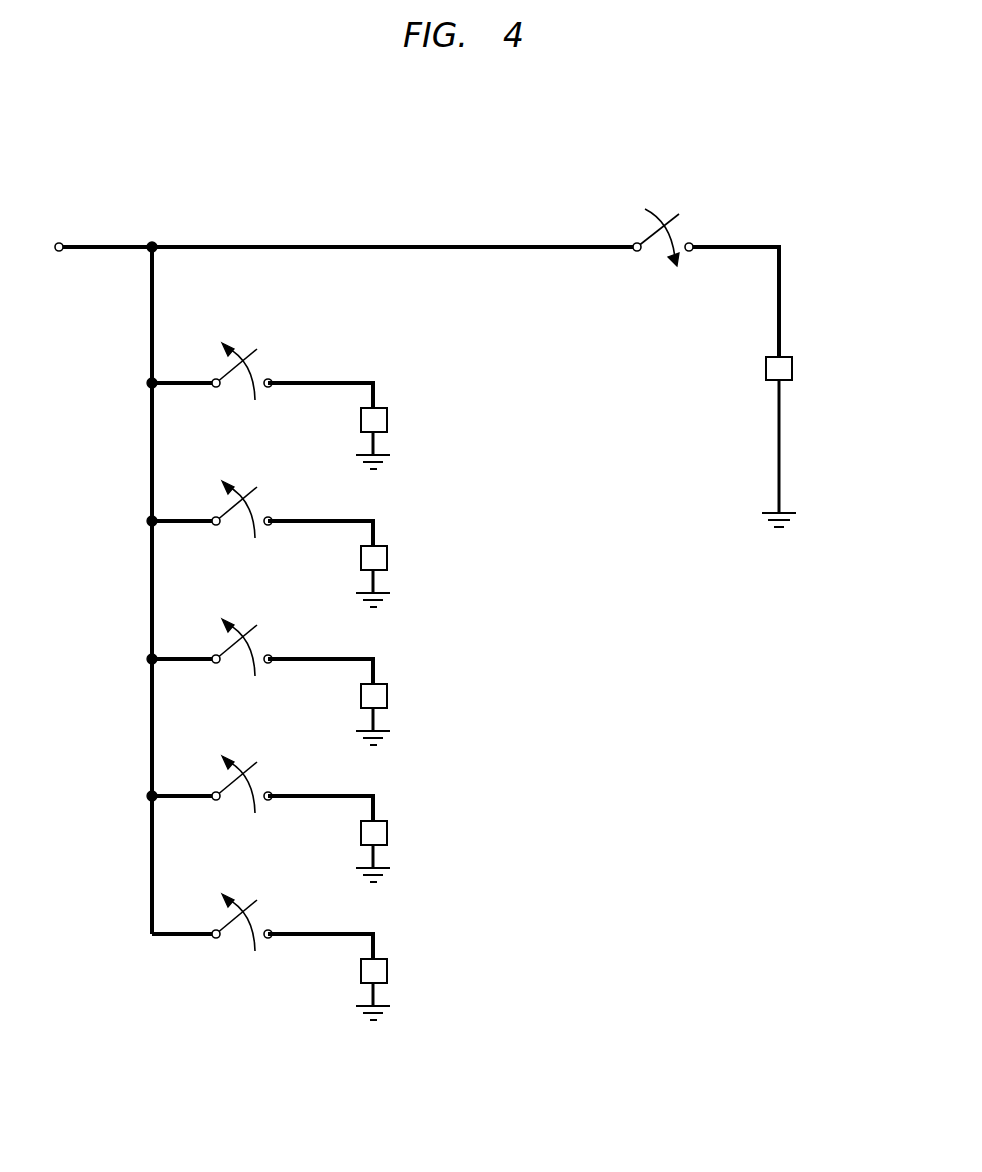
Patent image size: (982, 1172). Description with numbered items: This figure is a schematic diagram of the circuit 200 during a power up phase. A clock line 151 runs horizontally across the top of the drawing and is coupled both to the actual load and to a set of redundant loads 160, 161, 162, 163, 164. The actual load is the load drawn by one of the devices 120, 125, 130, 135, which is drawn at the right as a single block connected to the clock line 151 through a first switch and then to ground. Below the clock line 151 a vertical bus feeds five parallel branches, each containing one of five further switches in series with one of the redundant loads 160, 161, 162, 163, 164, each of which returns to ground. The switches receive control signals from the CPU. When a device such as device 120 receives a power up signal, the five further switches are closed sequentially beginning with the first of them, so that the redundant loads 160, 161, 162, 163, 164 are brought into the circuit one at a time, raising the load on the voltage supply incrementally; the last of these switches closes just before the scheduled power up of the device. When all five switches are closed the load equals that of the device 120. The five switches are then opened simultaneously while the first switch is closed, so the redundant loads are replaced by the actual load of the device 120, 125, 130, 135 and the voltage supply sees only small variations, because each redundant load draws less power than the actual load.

The circuit 200 is at (636, 146).
The clock line 151 is at (105, 245).
The device 120 is at (800, 387).
The device 125 is at (800, 387).
The device 130 is at (800, 387).
The device 135 is at (800, 387).
The redundant load 160 is at (296, 406).
The redundant load 161 is at (296, 544).
The redundant load 162 is at (296, 682).
The redundant load 163 is at (296, 819).
The redundant load 164 is at (296, 957).